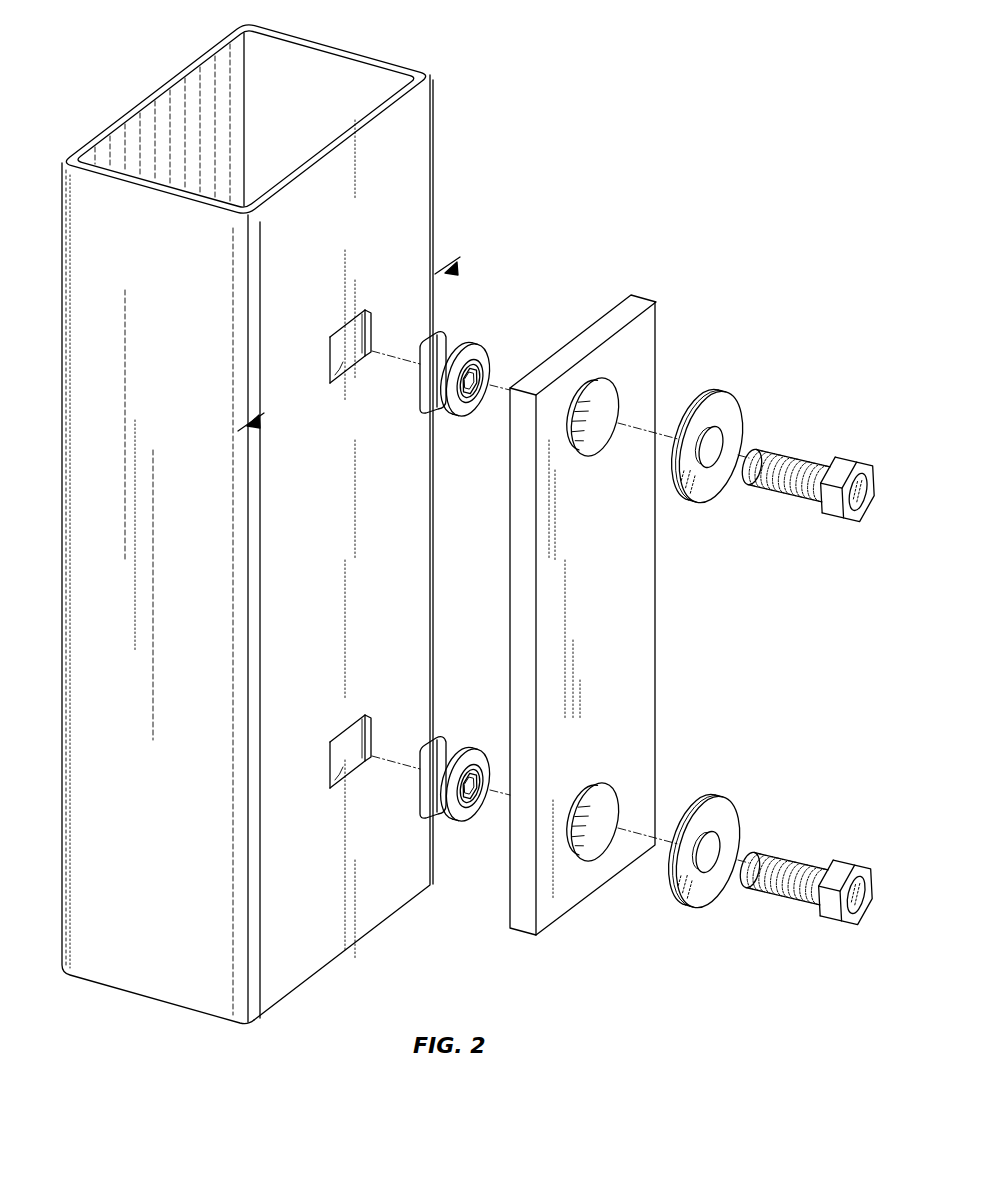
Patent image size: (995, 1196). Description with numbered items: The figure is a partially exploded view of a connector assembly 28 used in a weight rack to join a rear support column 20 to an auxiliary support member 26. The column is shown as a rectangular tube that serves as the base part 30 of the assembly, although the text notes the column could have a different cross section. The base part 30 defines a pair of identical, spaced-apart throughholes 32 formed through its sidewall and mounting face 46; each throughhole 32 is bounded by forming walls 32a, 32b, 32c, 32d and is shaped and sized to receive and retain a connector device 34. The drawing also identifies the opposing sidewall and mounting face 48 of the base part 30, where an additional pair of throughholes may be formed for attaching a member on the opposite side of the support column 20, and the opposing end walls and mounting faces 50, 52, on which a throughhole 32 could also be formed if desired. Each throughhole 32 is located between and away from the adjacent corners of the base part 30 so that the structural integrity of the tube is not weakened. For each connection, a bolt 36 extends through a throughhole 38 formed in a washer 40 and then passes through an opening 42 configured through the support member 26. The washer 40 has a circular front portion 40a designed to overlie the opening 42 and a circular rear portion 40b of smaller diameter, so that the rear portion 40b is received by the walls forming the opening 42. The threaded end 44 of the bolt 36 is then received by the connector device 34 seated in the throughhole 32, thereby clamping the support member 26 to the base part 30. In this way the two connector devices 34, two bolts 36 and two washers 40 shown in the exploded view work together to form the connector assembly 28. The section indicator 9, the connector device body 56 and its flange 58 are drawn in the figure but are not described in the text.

The rear support column 20 is at (263, 521).
The auxiliary support member 26 is at (616, 615).
The connector assembly 28 is at (638, 539).
The base part 30 is at (78, 371).
The throughhole 32 is at (348, 547).
The forming wall 32a is at (356, 316).
The forming wall 32b is at (372, 342).
The forming wall 32c is at (360, 366).
The forming wall 32d is at (330, 358).
The connector device 34 is at (638, 619).
The bolt 36 is at (853, 462).
The throughhole 38 is at (804, 697).
The washer 40 is at (749, 625).
The front portion 40a is at (730, 418).
The rear portion 40b is at (680, 400).
The opening 42 is at (602, 416).
The threaded end 44 is at (795, 480).
The sidewall and mounting face 46 is at (410, 132).
The opposing sidewall and mounting face 48 is at (148, 118).
The end wall and mounting face 50 is at (92, 228).
The end wall and mounting face 52 is at (330, 44).
The nut 56 is at (456, 592).
The nut flange 58 is at (470, 330).
The section line 9 is at (463, 271).